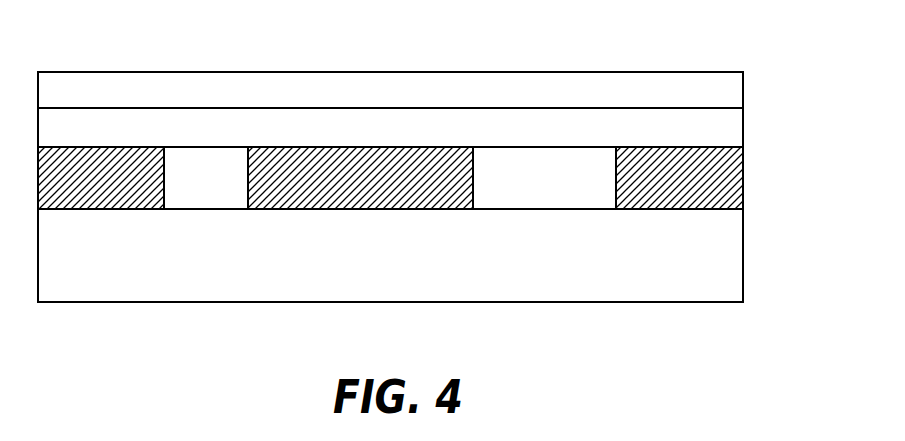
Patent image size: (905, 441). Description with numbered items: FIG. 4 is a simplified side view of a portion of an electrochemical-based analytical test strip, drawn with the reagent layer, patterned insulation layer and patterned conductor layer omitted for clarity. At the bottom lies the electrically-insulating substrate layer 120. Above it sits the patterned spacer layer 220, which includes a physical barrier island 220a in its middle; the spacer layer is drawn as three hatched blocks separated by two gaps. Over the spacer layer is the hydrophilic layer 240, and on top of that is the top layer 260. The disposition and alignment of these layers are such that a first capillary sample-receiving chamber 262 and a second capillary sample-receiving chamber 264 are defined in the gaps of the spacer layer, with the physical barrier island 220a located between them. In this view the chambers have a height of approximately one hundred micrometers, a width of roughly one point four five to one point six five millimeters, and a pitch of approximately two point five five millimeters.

The electrically-insulating substrate layer 120 is at (727, 262).
The patterned spacer layer 220 is at (100, 177).
The physical barrier island 220a is at (350, 177).
The hydrophilic layer 240 is at (727, 127).
The top layer 260 is at (727, 90).
The first capillary sample-receiving chamber 262 is at (540, 173).
The second capillary sample-receiving chamber 264 is at (205, 173).